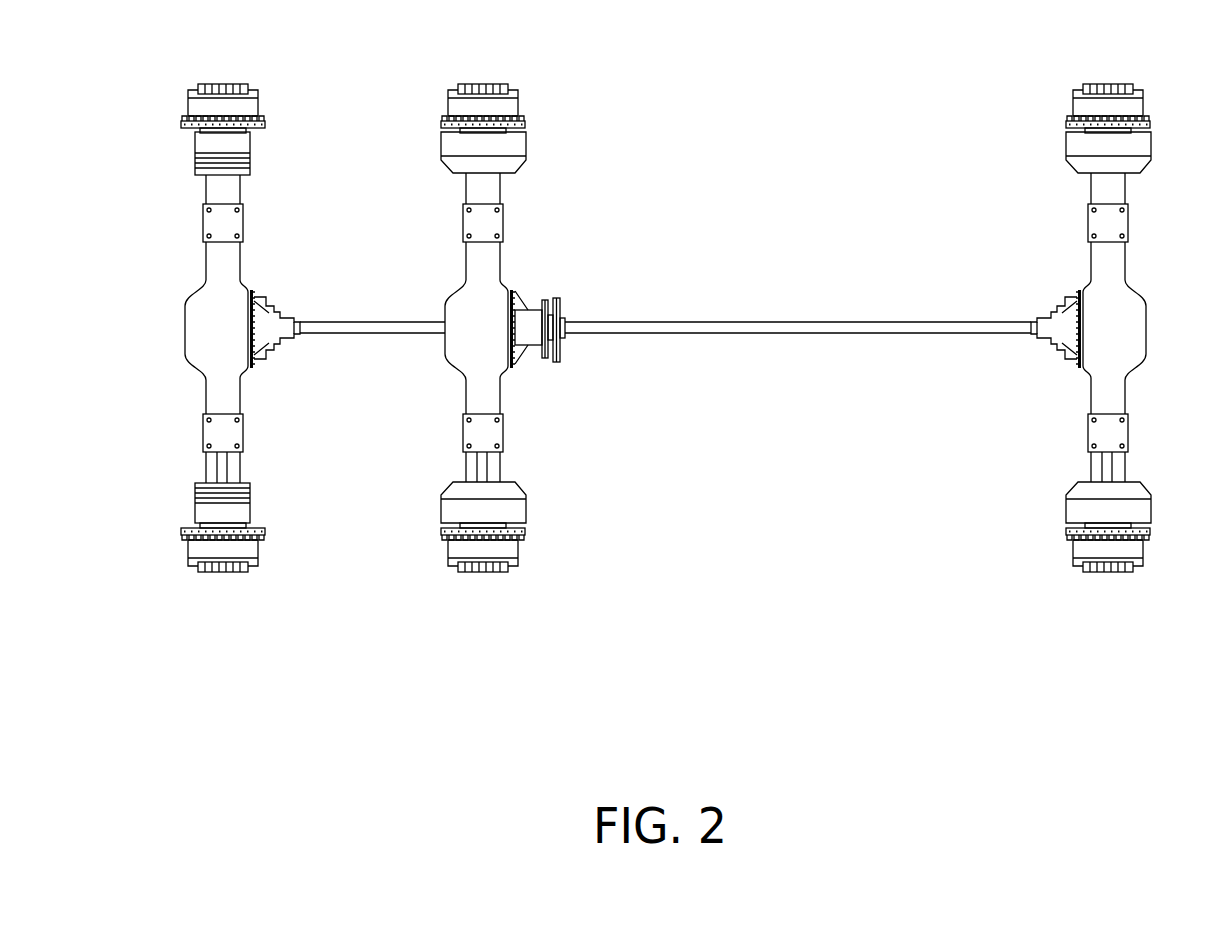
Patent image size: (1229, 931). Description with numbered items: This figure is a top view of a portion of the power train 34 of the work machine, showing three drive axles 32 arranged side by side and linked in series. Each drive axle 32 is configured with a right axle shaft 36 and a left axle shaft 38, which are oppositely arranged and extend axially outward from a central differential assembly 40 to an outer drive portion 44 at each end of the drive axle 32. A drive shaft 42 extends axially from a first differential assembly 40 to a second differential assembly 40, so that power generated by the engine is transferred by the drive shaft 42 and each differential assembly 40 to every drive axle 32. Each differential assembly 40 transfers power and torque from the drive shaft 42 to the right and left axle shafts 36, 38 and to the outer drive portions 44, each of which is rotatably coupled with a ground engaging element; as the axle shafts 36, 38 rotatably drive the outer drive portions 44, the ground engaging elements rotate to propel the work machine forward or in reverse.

The drive axle 32 is at (285, 196).
The power train 34 is at (679, 386).
The right axle shaft 36 is at (213, 433).
The left axle shaft 38 is at (214, 224).
The differential assembly 40 is at (254, 352).
The drive shaft 42 is at (372, 322).
The outer drive portion 44 is at (223, 102).